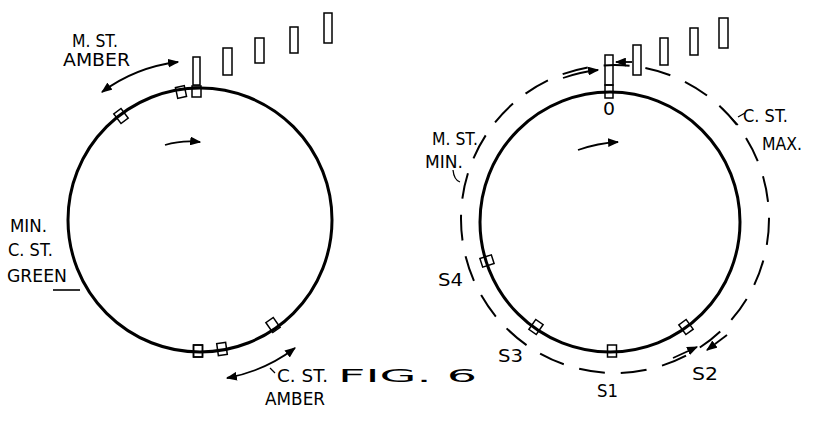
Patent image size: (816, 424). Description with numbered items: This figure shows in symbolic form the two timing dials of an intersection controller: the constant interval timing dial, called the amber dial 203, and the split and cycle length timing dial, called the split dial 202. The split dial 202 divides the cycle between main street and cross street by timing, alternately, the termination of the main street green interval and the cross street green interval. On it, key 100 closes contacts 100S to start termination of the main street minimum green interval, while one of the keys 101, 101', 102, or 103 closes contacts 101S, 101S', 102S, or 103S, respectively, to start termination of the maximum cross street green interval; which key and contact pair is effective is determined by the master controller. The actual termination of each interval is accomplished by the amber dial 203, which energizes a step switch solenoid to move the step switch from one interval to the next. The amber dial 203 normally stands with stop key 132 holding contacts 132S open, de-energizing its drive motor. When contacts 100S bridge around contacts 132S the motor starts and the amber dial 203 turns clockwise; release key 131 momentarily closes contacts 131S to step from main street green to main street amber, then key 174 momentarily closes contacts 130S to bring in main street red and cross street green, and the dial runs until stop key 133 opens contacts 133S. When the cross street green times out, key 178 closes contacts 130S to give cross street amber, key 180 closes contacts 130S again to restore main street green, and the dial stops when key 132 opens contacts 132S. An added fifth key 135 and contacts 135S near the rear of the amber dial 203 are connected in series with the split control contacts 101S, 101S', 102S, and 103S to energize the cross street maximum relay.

The amber dial 203 is at (222, 253).
The split dial 202 is at (630, 255).
The contacts 130S is at (193, 60).
The contacts 131S is at (227, 46).
The contacts 132S is at (265, 62).
The contacts 133S is at (300, 48).
The contacts 135S is at (333, 30).
The release key 131 is at (182, 99).
The stop key 132 is at (197, 98).
The key 174 is at (125, 122).
The fifth key 135 is at (199, 344).
The stop key 133 is at (201, 333).
The key 178 is at (222, 343).
The key 180 is at (272, 319).
The contacts 100S is at (603, 62).
The contacts 103S is at (635, 45).
The contacts 101S is at (688, 58).
The contacts 102S is at (700, 45).
The contacts 101S' is at (758, 33).
The key 100 is at (612, 113).
The key 101' is at (503, 256).
The key 102 is at (542, 318).
The key 103 is at (612, 345).
The key 101 is at (680, 320).